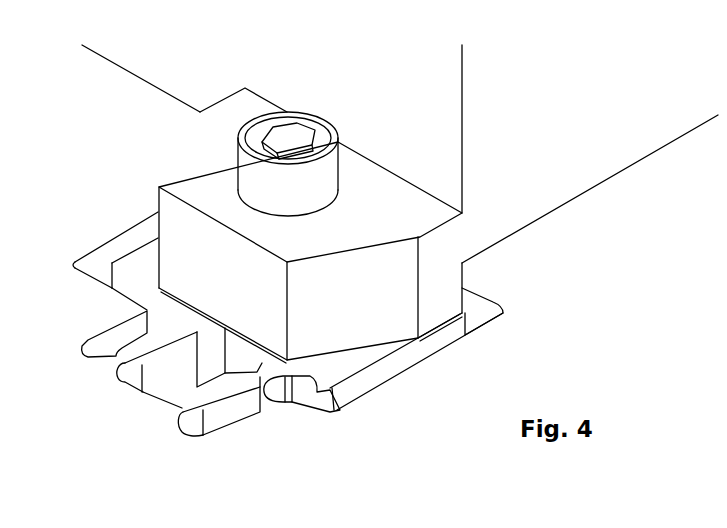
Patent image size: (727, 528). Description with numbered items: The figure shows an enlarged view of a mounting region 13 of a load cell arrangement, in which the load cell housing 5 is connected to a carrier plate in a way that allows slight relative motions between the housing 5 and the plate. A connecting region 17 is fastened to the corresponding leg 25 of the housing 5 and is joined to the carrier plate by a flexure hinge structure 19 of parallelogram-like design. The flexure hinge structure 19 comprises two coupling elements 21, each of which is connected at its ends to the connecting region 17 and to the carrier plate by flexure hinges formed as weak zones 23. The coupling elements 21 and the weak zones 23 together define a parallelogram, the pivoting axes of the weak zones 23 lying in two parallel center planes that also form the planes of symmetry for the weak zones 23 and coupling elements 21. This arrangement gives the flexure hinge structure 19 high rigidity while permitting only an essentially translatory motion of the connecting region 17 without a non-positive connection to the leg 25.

The housing 5 is at (543, 203).
The mounting region 13 is at (427, 377).
The connecting region 17 is at (142, 262).
The flexure hinge structure 19 is at (255, 423).
The coupling element 21 is at (160, 340).
The weak zone 23 is at (198, 325).
The leg 25 is at (184, 178).